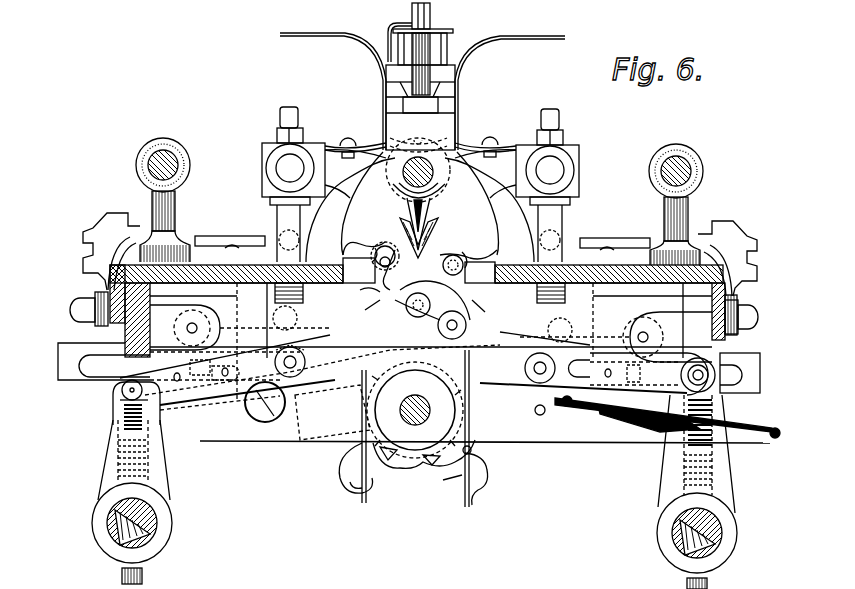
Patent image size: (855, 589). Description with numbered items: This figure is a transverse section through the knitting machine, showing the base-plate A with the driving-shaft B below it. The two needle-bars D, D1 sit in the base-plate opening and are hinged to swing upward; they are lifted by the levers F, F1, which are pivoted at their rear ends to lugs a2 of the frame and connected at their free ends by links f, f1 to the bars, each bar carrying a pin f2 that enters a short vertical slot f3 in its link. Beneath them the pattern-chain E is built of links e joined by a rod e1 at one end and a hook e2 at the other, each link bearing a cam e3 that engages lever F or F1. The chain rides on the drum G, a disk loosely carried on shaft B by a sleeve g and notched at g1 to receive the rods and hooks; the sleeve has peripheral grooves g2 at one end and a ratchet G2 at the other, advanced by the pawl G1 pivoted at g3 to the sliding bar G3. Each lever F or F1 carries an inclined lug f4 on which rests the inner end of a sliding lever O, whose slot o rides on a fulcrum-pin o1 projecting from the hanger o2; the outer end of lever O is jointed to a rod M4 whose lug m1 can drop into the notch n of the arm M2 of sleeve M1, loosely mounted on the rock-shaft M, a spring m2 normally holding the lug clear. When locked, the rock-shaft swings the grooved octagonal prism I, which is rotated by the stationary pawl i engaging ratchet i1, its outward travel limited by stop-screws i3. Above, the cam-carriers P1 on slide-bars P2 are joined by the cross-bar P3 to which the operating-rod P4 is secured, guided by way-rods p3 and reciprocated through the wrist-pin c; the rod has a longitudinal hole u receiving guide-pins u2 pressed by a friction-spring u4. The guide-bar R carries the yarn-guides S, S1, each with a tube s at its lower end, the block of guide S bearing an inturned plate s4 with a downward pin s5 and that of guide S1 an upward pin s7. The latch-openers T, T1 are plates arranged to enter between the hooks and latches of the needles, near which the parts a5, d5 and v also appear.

The inturned plate s4 is at (388, 28).
The downwardly-projecting pin s5 is at (432, 23).
The upwardly-projecting pin s7 is at (447, 46).
The yarn-guide S is at (388, 90).
The yarn-guide S1 is at (455, 90).
The guide-bar R is at (420, 105).
The guide-pins u2 is at (418, 132).
The operating-rod P4 is at (432, 160).
The friction-spring u4 is at (497, 145).
The latch-openers T is at (358, 226).
The arm T1 is at (485, 238).
The wedge d5 is at (428, 235).
The tube s is at (412, 238).
The cam-carrier P1 is at (262, 148).
The slide-bar P2 is at (276, 168).
The cross-bar P3 is at (420, 174).
The way-rods p3 is at (148, 166).
The grooved octagonal prisms I is at (84, 236).
The stationary pawls i is at (202, 240).
The ratchets i1 is at (100, 256).
The base-plate A is at (617, 268).
The needle-bar D is at (423, 306).
The needle-bar D1 is at (420, 262).
The roller v is at (385, 263).
The pin f2 is at (382, 248).
The vertical slot f3 is at (430, 246).
The link f1 is at (365, 293).
The lug f4 is at (423, 310).
The link f is at (473, 299).
The cam a5 is at (432, 303).
The wrist-pin c is at (433, 273).
The lugs a2 is at (178, 320).
The stop-screws i3 is at (78, 307).
The hanger o2 is at (407, 322).
The lever F is at (227, 366).
The lever F1 is at (583, 356).
The fulcrum-pin o1 is at (290, 348).
The sliding lever O is at (437, 374).
The slot o is at (392, 370).
The lug m1 is at (122, 388).
The arm M2 is at (165, 445).
The spring m2 is at (130, 440).
The rod M4 is at (128, 422).
The notch n is at (128, 408).
The sleeve M1 is at (150, 512).
The rock-shaft M is at (152, 523).
The sliding bar G3 is at (316, 435).
The pawl pivot g3 is at (255, 420).
The pawl G1 is at (322, 392).
The sleeve g is at (421, 415).
The peripheral grooves g2 is at (388, 411).
The driving-shaft B is at (416, 424).
The cam e3 is at (503, 480).
The links e is at (368, 462).
The hook e2 is at (360, 496).
The rod e1 is at (474, 456).
The notches g1 is at (396, 462).
The drum G is at (411, 466).
The ratchet G2 is at (403, 490).
The pattern-chain E is at (449, 481).
The hole u is at (537, 403).